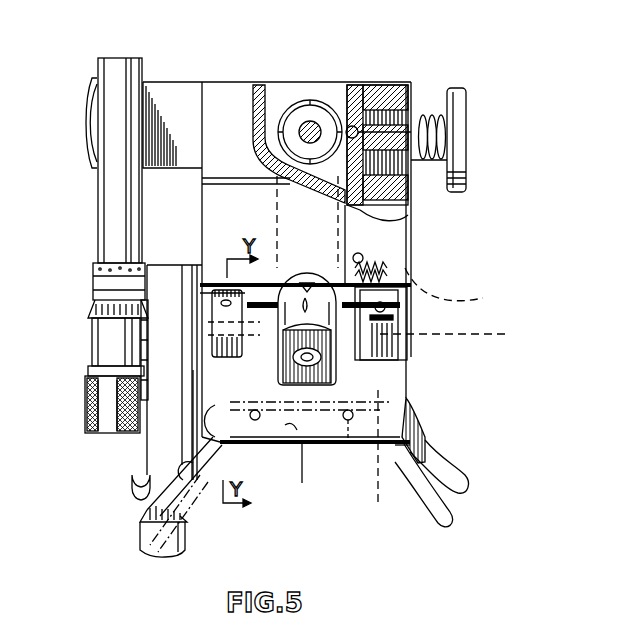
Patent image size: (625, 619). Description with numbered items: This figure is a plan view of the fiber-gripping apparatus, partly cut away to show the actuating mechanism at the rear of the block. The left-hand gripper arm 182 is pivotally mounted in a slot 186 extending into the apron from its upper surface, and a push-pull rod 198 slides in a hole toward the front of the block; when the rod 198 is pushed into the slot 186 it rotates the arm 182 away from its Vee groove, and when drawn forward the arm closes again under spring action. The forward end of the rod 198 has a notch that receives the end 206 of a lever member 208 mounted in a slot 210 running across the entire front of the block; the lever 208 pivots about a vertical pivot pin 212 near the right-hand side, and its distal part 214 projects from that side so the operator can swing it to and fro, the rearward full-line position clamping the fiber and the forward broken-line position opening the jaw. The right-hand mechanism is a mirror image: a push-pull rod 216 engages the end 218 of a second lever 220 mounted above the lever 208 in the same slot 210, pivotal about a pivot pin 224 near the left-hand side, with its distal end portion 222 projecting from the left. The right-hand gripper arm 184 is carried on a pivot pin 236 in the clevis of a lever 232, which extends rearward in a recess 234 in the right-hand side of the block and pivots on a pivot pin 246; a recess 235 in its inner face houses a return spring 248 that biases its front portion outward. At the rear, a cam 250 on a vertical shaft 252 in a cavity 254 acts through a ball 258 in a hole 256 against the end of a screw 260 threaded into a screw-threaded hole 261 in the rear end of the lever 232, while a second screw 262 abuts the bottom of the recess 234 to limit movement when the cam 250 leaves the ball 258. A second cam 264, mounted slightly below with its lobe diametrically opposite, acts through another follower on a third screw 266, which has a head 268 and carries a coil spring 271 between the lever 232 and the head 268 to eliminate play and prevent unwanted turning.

The gripper arm 182 is at (215, 326).
The gripper arm 184 is at (393, 334).
The slot 186 is at (195, 362).
The push-pull rod 198 is at (114, 416).
The end of lever member 206 is at (225, 365).
The lever member 208 is at (425, 432).
The slot 210 is at (323, 446).
The pivot pin 212 is at (348, 444).
The distal part of lever 214 is at (455, 466).
The push-pull rod 216 is at (400, 380).
The end of second lever 218 is at (375, 459).
The second lever 220 is at (280, 478).
The distal end portion 222 is at (190, 480).
The pivot pin 224 is at (262, 444).
The lever 232 is at (408, 300).
The recess 234 is at (413, 110).
The recess 235 is at (400, 270).
The pivot pin 236 is at (465, 335).
The pivot pin 246 is at (364, 258).
The return spring 248 is at (461, 287).
The cam 250 is at (313, 105).
The shaft 252 is at (302, 121).
The cavity 254 is at (350, 126).
The hole 256 is at (370, 198).
The ball 258 is at (365, 90).
The screw 260 is at (411, 128).
The screw-threaded hole 261 is at (447, 162).
The second screw 262 is at (267, 96).
The second cam 264 is at (268, 98).
The third screw 266 is at (458, 90).
The head 268 is at (467, 105).
The coil spring 271 is at (430, 108).